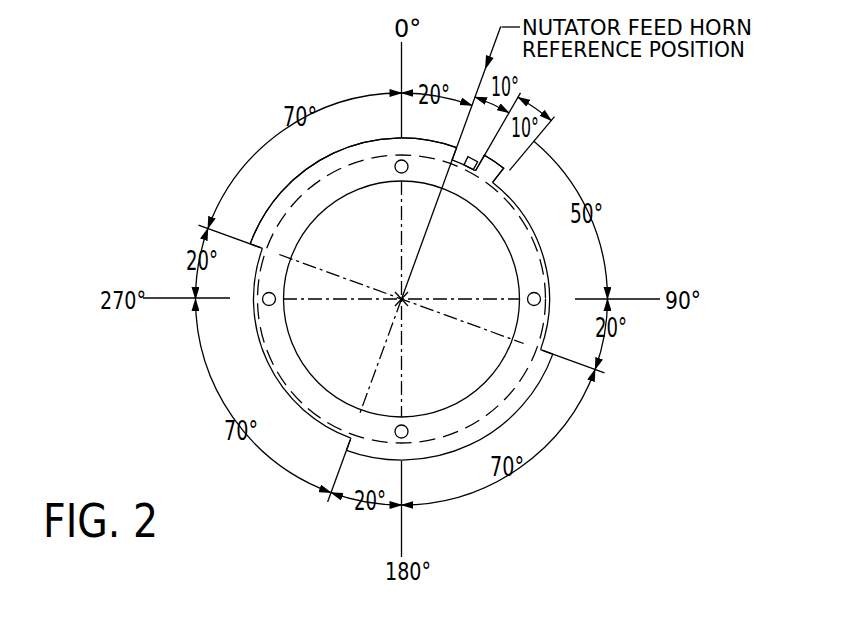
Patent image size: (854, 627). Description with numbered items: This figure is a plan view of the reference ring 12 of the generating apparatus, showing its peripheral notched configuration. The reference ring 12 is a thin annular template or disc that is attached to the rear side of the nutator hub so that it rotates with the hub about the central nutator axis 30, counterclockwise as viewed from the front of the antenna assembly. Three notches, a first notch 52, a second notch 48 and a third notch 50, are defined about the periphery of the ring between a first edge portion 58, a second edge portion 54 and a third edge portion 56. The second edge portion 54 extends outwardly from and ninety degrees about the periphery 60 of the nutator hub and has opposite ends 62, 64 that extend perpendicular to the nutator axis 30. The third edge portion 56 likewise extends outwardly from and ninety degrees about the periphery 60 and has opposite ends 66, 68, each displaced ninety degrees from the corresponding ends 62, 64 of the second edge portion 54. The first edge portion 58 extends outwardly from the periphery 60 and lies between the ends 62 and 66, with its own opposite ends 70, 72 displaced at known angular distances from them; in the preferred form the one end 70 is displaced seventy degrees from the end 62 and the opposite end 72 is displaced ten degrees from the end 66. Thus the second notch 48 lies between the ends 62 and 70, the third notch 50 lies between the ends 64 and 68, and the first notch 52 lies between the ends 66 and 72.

The reference ring 12 is at (196, 98).
The nutator axis 30 is at (404, 301).
The second notch 48 is at (550, 262).
The third notch 50 is at (263, 370).
The first notch 52 is at (458, 143).
The second edge portion 54 is at (451, 452).
The third edge portion 56 is at (280, 195).
The first edge portion 58 is at (507, 172).
The periphery of the nutator hub 60 is at (252, 343).
The one end of the second edge portion 62 is at (556, 351).
The opposite end of the second edge portion 64 is at (345, 455).
The one end of the third edge portion 66 is at (447, 180).
The opposite end of the third edge portion 68 is at (247, 247).
The one end of the first edge portion 70 is at (505, 180).
The opposite end of the first edge portion 72 is at (470, 171).